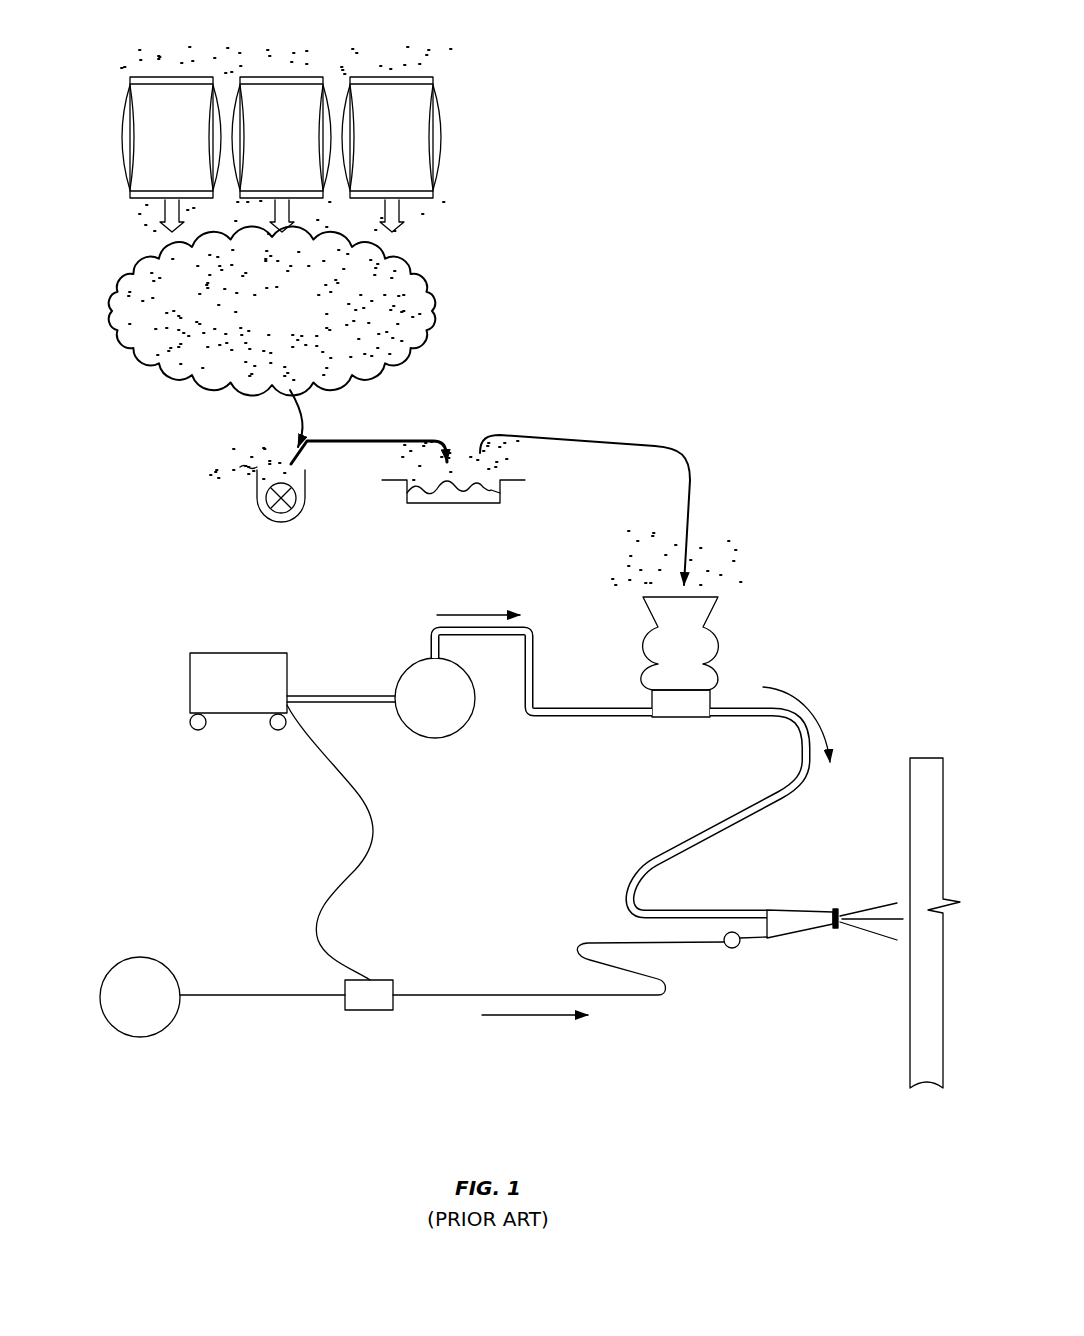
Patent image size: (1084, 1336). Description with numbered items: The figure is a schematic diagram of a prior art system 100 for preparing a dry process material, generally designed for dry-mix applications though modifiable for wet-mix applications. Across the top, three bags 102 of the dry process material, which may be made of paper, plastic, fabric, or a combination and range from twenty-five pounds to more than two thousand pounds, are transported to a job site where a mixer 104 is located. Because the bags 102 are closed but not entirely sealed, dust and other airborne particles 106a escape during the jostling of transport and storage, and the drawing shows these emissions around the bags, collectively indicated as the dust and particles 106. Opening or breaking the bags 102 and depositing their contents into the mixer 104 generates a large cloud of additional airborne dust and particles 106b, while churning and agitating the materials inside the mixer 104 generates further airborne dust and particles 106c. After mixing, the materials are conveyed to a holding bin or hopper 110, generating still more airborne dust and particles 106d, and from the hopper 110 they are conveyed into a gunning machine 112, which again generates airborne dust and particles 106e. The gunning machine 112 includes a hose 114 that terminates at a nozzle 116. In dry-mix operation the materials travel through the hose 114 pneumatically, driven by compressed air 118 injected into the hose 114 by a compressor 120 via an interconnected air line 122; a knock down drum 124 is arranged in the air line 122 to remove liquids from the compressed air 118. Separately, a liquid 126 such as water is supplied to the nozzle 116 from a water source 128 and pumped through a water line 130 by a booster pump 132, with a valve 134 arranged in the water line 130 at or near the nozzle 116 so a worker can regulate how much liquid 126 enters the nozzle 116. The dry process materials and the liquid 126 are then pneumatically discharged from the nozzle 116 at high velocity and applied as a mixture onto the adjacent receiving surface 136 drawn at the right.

The system 100 is at (748, 312).
The bags 102 is at (281, 154).
The mixer 104 is at (273, 519).
The loose-fill fibers 106 is at (97, 80).
The dust and other airborne particles 106a is at (455, 80).
The airborne dust and particles 106b is at (272, 336).
The airborne dust and particles 106c is at (224, 450).
The airborne dust and particles 106d is at (535, 460).
The airborne dust and particles 106e is at (727, 533).
The hopper 110 is at (430, 503).
The gunning machine 112 is at (726, 645).
The hose 114 is at (683, 837).
The nozzle 116 is at (800, 908).
The compressed air 118 is at (473, 613).
The compressor 120 is at (292, 816).
The air line 122 is at (578, 720).
The knock down drum 124 is at (435, 698).
The liquid 126 is at (527, 1016).
The water source 128 is at (140, 997).
The water line 130 is at (253, 996).
The booster pump 132 is at (367, 1010).
The valve 134 is at (737, 950).
The receiving surface 136 is at (908, 1032).